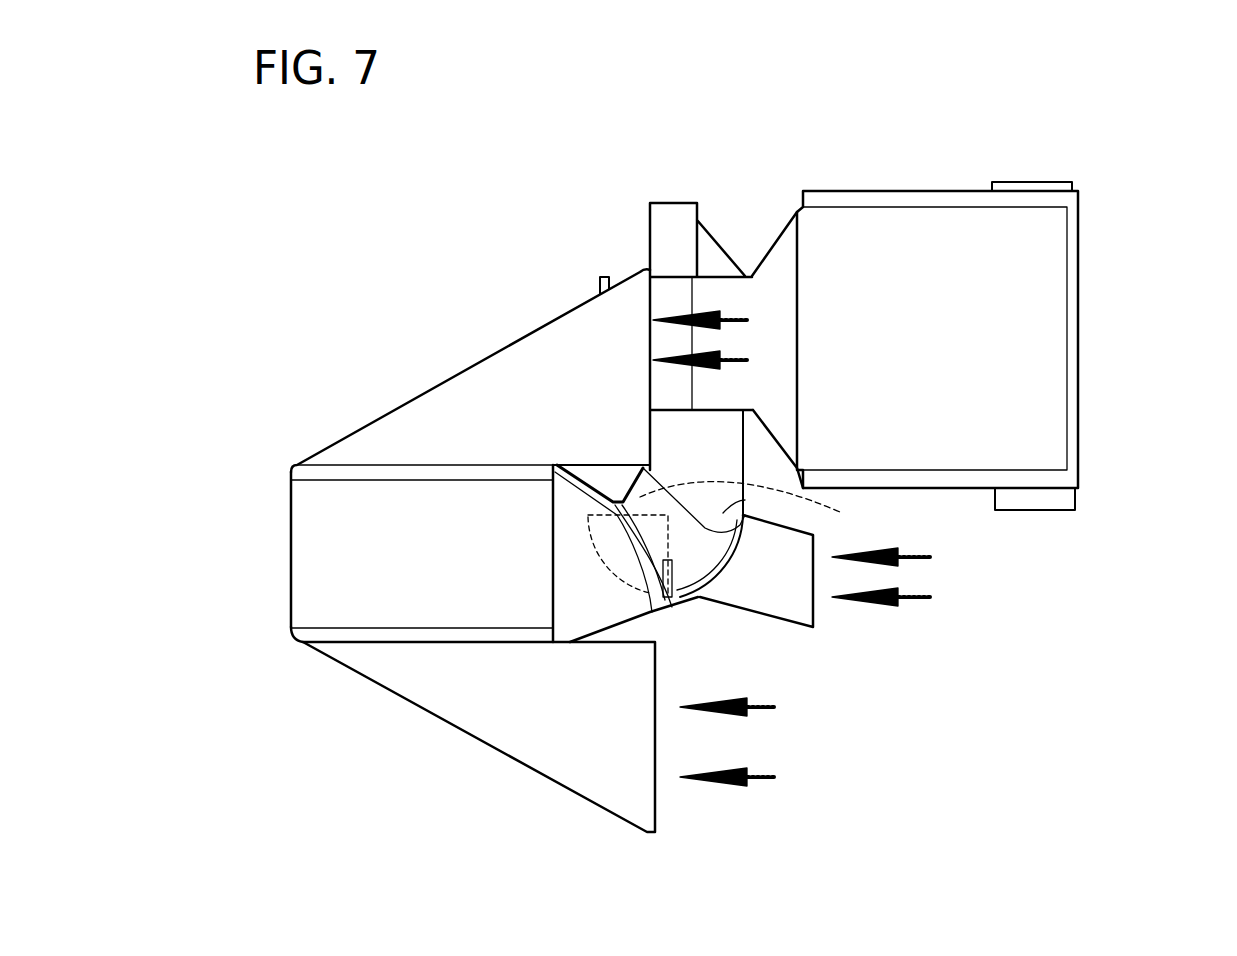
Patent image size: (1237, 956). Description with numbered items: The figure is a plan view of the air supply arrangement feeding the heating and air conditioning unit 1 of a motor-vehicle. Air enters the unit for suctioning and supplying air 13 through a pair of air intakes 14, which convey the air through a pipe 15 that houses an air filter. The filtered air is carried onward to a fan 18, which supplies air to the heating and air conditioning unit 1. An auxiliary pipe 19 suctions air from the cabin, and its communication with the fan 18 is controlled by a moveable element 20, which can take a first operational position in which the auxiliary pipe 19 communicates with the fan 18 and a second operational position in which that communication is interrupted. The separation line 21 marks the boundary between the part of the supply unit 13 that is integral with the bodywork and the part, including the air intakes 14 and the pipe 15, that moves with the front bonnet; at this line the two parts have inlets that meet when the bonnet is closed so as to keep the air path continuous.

The heating and air conditioning unit 1 is at (1117, 325).
The unit for suctioning and supplying air 13 is at (308, 372).
The air intakes 14 is at (493, 367).
The pipe 15 is at (303, 560).
The fan 18 is at (705, 302).
The auxiliary pipe 19 is at (815, 607).
The moveable element 20 is at (727, 513).
The separation line 21 is at (640, 567).